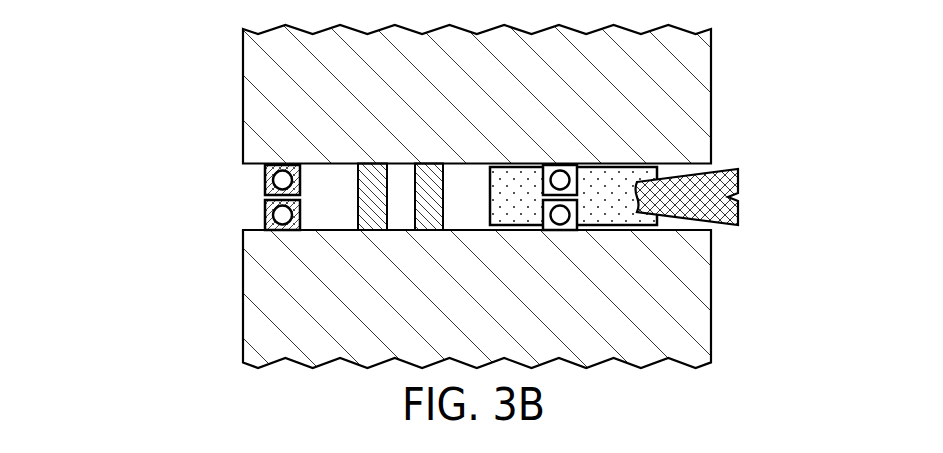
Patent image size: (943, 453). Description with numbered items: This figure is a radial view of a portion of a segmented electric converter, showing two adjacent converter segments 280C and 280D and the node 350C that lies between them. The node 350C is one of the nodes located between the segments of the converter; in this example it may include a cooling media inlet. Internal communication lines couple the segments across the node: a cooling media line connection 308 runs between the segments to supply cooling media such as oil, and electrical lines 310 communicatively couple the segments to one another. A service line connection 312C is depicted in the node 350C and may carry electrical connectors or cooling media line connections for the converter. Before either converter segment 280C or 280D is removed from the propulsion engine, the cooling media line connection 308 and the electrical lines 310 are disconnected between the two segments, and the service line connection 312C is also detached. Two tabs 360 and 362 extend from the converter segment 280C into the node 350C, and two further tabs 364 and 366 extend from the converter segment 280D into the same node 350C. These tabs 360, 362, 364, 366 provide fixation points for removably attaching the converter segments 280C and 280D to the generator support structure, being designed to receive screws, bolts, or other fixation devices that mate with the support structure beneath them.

The converter segment 280C is at (711, 63).
The converter segment 280D is at (711, 318).
The node 350C is at (204, 193).
The tab 360 is at (265, 182).
The tab 364 is at (265, 212).
The electrical lines 310 is at (373, 165).
The cooling media line connection 308 is at (428, 165).
The service line connection 312C is at (629, 226).
The tab 362 is at (577, 173).
The tab 366 is at (577, 213).